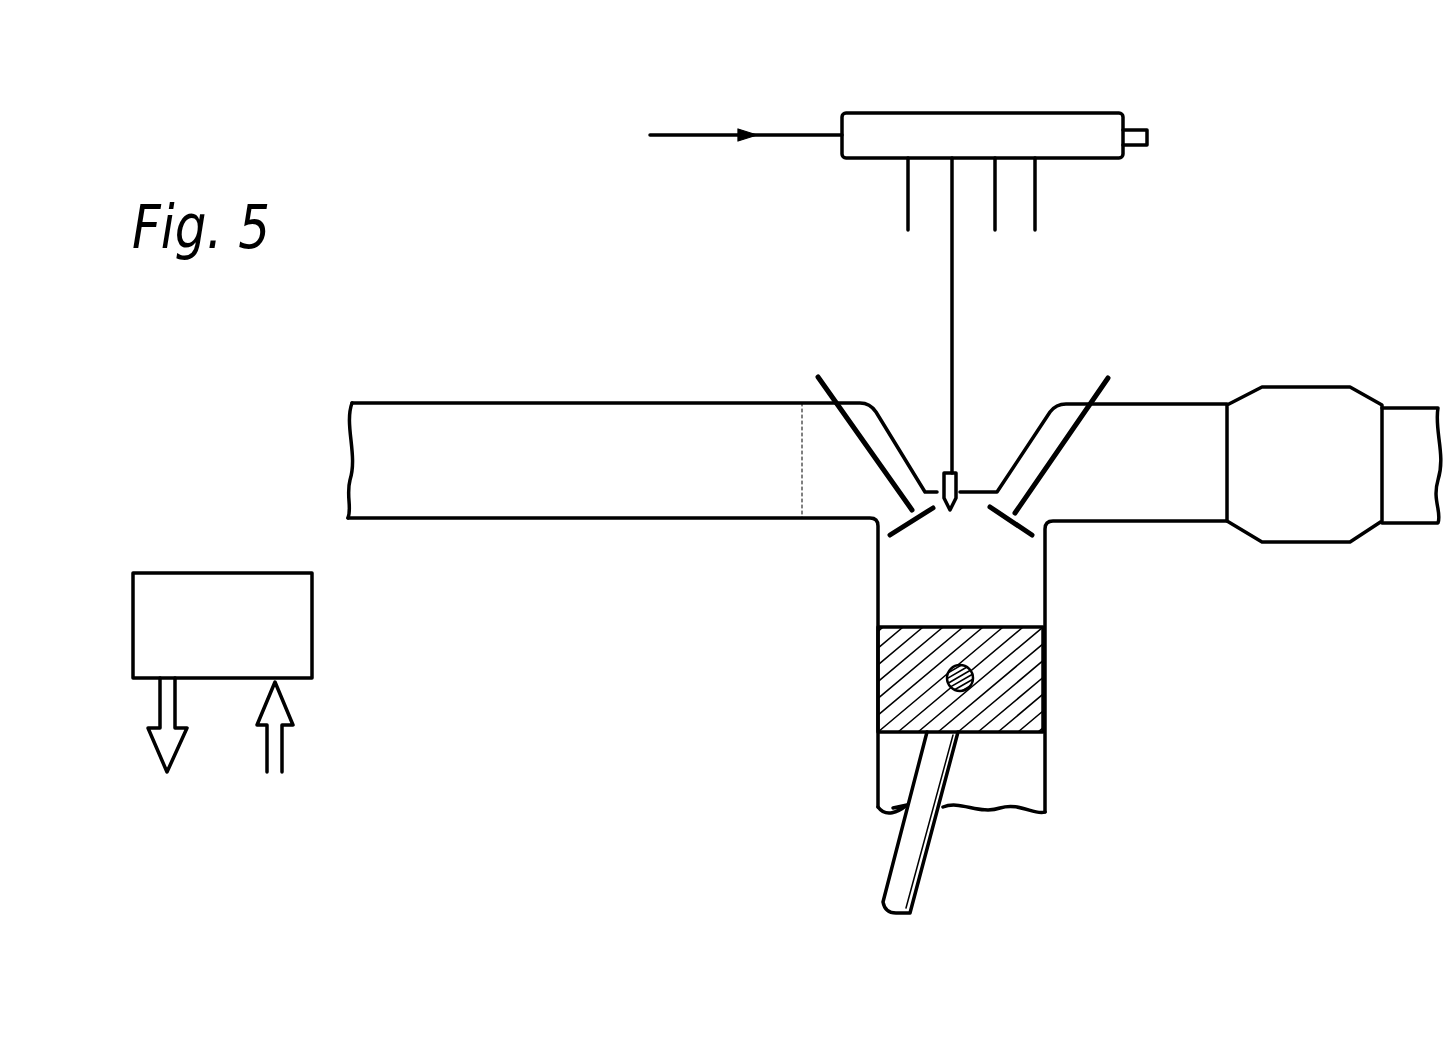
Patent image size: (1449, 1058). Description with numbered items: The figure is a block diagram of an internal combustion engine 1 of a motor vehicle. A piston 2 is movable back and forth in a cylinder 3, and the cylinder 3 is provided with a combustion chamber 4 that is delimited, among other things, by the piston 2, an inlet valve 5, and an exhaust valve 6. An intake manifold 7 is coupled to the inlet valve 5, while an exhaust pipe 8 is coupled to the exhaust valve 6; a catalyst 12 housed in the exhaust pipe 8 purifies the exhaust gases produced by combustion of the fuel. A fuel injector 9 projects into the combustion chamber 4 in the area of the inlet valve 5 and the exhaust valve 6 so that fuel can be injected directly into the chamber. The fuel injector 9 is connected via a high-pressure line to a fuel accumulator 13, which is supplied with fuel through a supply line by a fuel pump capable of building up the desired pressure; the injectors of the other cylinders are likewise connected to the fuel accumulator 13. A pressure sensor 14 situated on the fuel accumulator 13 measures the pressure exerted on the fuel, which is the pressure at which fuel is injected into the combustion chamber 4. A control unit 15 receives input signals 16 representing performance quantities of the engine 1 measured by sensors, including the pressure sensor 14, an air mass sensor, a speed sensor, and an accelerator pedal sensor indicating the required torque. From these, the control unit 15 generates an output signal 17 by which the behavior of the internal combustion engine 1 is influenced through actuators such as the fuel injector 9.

The internal combustion engine 1 is at (725, 664).
The piston 2 is at (1030, 689).
The cylinder 3 is at (1019, 692).
The combustion chamber 4 is at (910, 592).
The inlet valve 5 is at (855, 428).
The exhaust valve 6 is at (1068, 433).
The intake manifold 7 is at (673, 518).
The exhaust pipe 8 is at (1160, 521).
The fuel injector 9 is at (945, 478).
The catalyst 12 is at (1285, 485).
The fuel accumulator 13 is at (873, 130).
The pressure sensor 14 is at (1147, 137).
The control unit 15 is at (230, 593).
The input signals 16 is at (275, 752).
The output signal 17 is at (170, 703).